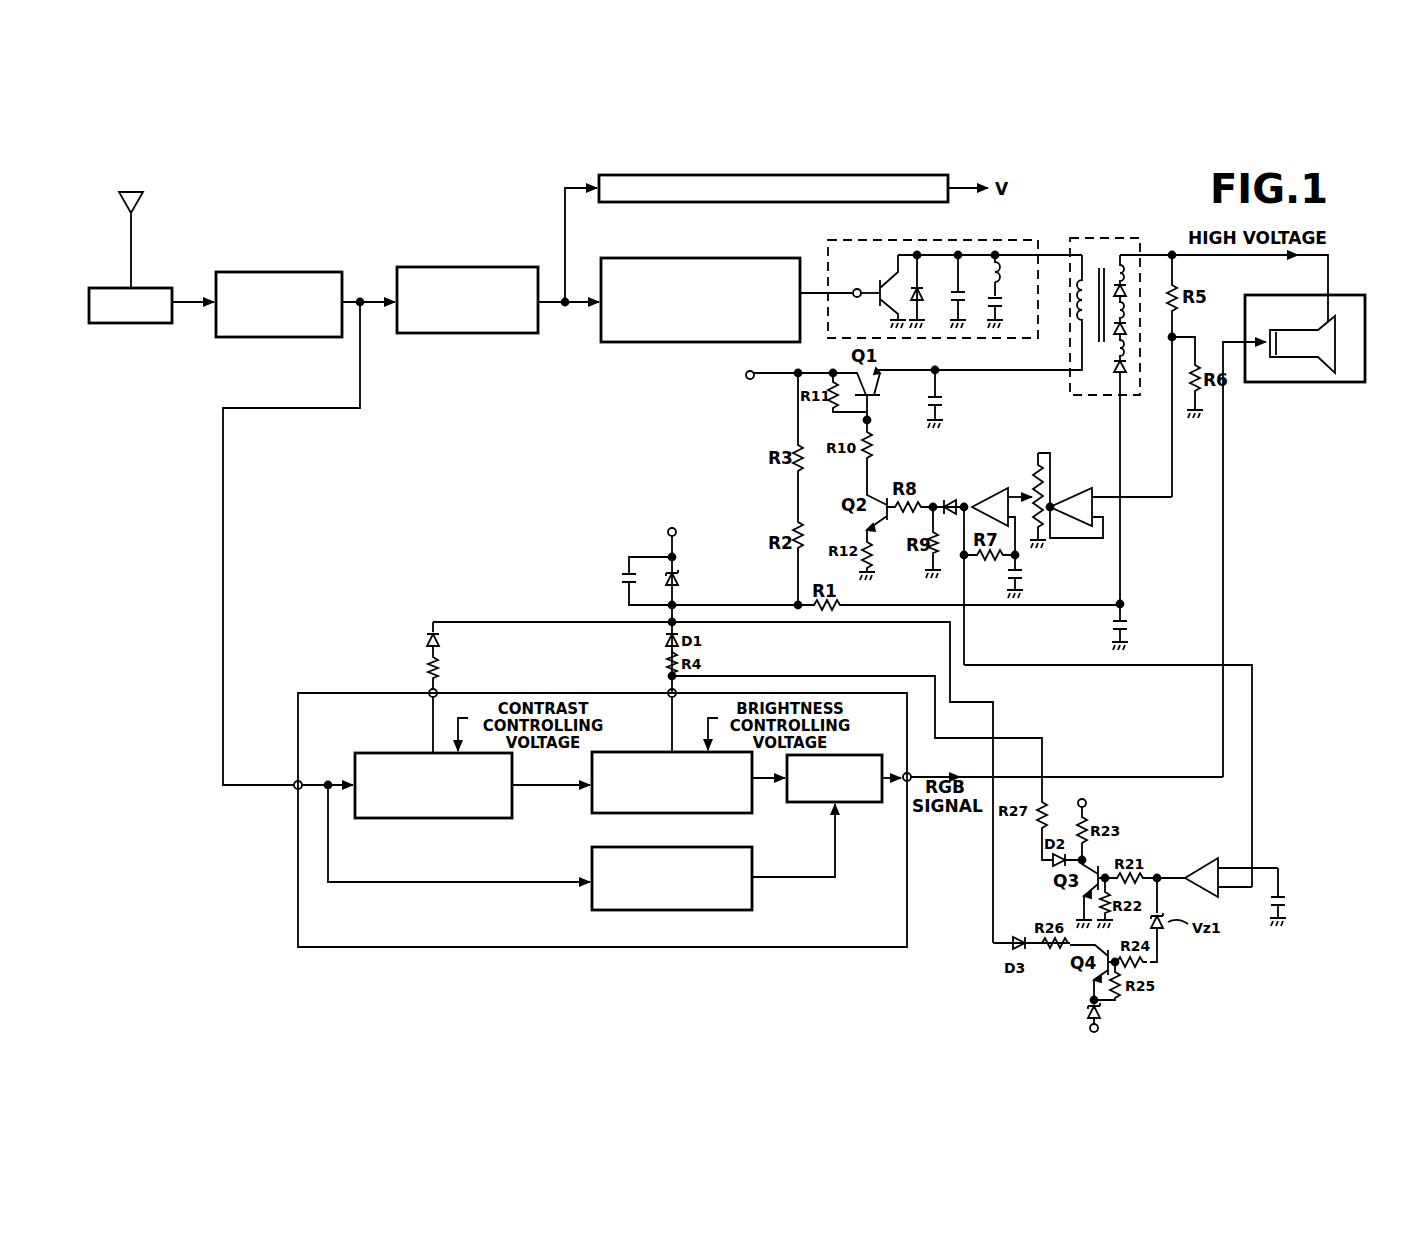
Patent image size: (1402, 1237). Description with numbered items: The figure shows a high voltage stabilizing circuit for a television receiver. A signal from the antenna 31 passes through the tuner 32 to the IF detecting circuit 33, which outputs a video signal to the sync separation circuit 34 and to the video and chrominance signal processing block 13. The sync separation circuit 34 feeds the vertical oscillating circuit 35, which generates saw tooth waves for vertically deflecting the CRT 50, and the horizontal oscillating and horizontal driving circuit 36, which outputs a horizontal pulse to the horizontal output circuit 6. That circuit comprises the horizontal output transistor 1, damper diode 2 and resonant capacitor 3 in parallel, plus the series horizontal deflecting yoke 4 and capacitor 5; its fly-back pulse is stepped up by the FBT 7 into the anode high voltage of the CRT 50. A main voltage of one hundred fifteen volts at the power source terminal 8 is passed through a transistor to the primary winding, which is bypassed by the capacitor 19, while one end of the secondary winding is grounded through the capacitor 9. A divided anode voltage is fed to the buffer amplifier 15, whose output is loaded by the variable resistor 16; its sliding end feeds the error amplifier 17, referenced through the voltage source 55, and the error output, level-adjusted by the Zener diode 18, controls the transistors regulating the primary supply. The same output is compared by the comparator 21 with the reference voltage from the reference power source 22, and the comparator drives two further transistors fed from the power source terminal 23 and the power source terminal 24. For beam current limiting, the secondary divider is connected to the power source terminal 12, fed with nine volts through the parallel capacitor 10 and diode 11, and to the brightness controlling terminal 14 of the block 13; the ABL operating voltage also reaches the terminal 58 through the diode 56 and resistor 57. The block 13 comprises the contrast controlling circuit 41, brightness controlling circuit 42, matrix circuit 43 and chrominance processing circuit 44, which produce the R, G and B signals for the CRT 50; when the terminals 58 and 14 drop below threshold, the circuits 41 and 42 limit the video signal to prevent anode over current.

The horizontal output transistor 1 is at (880, 282).
The damper diode 2 is at (924, 296).
The resonant capacitor 3 is at (965, 300).
The horizontal deflecting yoke 4 is at (1000, 278).
The capacitor 5 is at (1003, 305).
The horizontal output circuit 6 is at (975, 240).
The FBT 7 is at (1112, 240).
The power source terminal 8 is at (750, 379).
The capacitor 9 is at (1132, 626).
The capacitor 10 is at (616, 582).
The diode 11 is at (684, 579).
The power source terminal 12 is at (677, 532).
The video and chrominance signal processing block 13 is at (326, 693).
The brightness controlling terminal 14 is at (668, 691).
The buffer amplifier 15 is at (1086, 485).
The variable resistor 16 is at (1036, 468).
The error amplifier 17 is at (980, 492).
The Zener diode 18 is at (946, 500).
The capacitor 19 is at (950, 400).
The comparator 21 is at (1207, 860).
The reference power source 22 is at (1297, 898).
The power source terminal 23 is at (1087, 803).
The power source terminal 24 is at (1105, 1022).
The antenna 31 is at (145, 198).
The tuner 32 is at (152, 288).
The IF detecting circuit 33 is at (298, 272).
The sync separation circuit 34 is at (463, 267).
The vertical oscillating circuit 35 is at (745, 202).
The horizontal oscillating and horizontal driving circuit 36 is at (676, 258).
The contrast controlling circuit 41 is at (457, 818).
The brightness controlling circuit 42 is at (592, 803).
The matrix circuit 43 is at (800, 802).
The chrominance processing circuit 44 is at (592, 905).
The CRT 50 is at (1285, 383).
The voltage source 55 is at (1025, 576).
The diode 56 is at (426, 638).
The resistor 57 is at (426, 668).
The terminal 58 is at (426, 689).